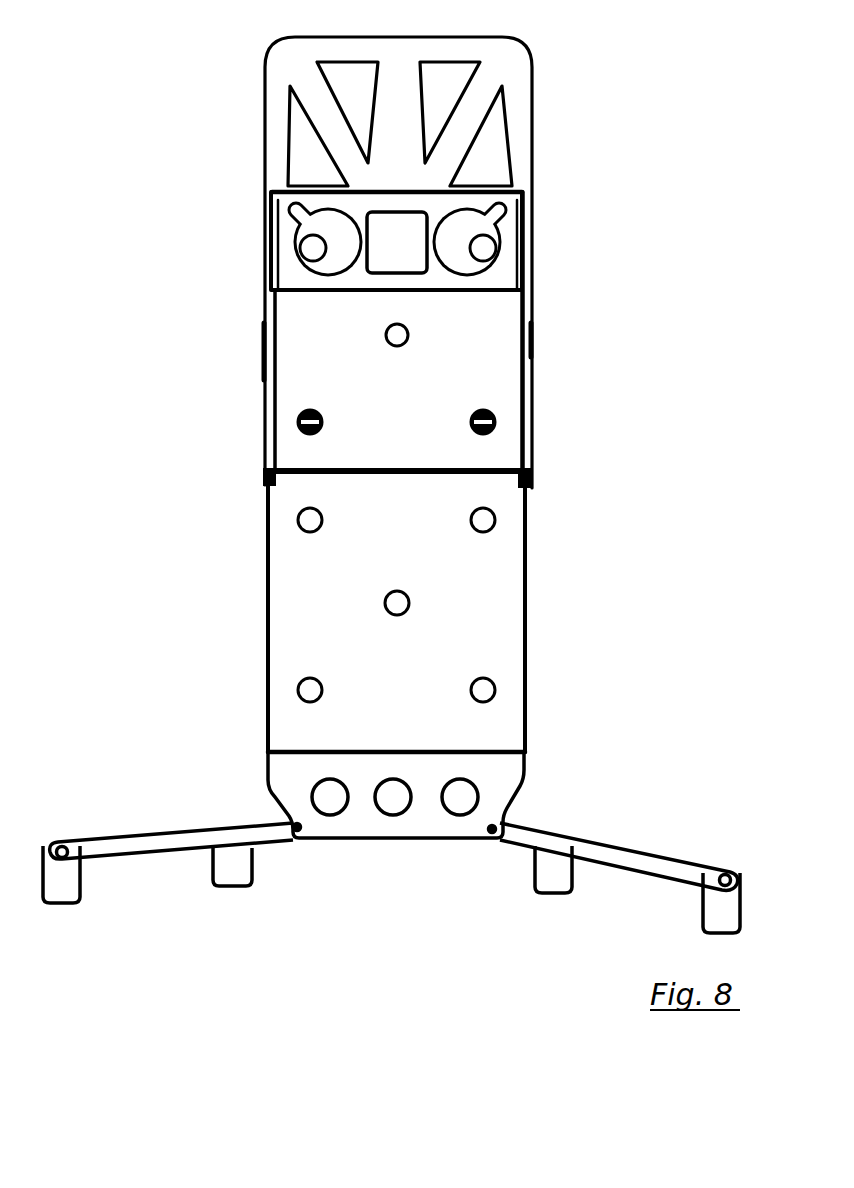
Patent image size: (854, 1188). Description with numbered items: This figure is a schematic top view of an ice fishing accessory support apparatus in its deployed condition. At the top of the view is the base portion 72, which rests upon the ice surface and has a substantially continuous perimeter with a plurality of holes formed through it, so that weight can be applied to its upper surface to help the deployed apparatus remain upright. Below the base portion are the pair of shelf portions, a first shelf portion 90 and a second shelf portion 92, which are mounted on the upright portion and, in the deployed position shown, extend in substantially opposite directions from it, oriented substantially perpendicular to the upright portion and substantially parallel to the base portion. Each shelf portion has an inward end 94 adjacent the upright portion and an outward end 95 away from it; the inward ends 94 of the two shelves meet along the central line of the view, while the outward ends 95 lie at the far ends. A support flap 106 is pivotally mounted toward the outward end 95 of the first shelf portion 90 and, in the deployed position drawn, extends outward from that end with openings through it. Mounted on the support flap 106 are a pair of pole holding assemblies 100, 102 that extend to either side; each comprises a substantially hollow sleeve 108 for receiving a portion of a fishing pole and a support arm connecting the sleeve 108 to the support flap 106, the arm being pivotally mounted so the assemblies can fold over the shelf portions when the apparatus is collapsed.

The base portion 72 is at (532, 117).
The outward end 95 is at (513, 195).
The second shelf portion 92 is at (487, 375).
The inward end 94 is at (490, 470).
The first shelf portion 90 is at (483, 637).
The support flap 106 is at (357, 820).
The pole holding assembly 102 is at (155, 892).
The pole holding assembly 100 is at (620, 904).
The sleeve 108 is at (542, 868).